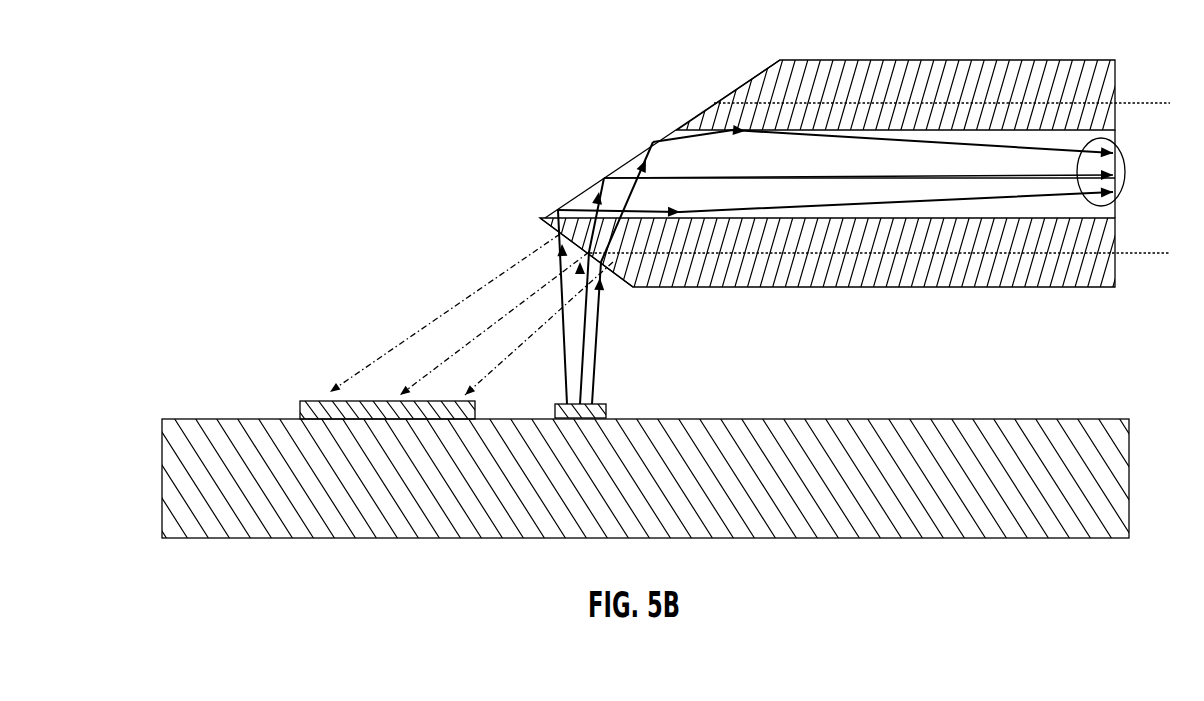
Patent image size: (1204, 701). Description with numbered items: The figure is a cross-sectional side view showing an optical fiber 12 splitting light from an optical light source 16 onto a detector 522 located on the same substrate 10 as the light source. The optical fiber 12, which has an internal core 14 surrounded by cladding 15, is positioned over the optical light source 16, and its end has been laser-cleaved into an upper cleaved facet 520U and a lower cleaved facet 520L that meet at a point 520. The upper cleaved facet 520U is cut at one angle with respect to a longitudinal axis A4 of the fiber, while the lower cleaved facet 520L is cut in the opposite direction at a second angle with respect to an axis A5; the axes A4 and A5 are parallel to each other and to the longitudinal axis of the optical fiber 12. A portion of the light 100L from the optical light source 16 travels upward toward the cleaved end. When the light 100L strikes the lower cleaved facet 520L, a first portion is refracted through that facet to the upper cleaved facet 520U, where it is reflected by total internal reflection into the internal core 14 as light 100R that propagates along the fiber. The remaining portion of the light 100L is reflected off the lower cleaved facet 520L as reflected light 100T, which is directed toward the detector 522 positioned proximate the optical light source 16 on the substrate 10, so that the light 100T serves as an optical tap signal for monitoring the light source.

The substrate 10 is at (945, 420).
The optical fiber 12 is at (1100, 290).
The internal core 14 is at (1033, 138).
The upper cladding layer 15 is at (1060, 80).
The optical light source 16 is at (608, 412).
The point 520 is at (641, 204).
The upper cleaved facet 520U is at (662, 140).
The lower cleaved facet 520L is at (620, 286).
The detector 522 is at (300, 408).
The light 100L is at (610, 367).
The light 100R is at (1122, 184).
The reflected light 100T is at (438, 320).
The longitudinal axis A4 is at (957, 105).
The axis A5 is at (895, 256).